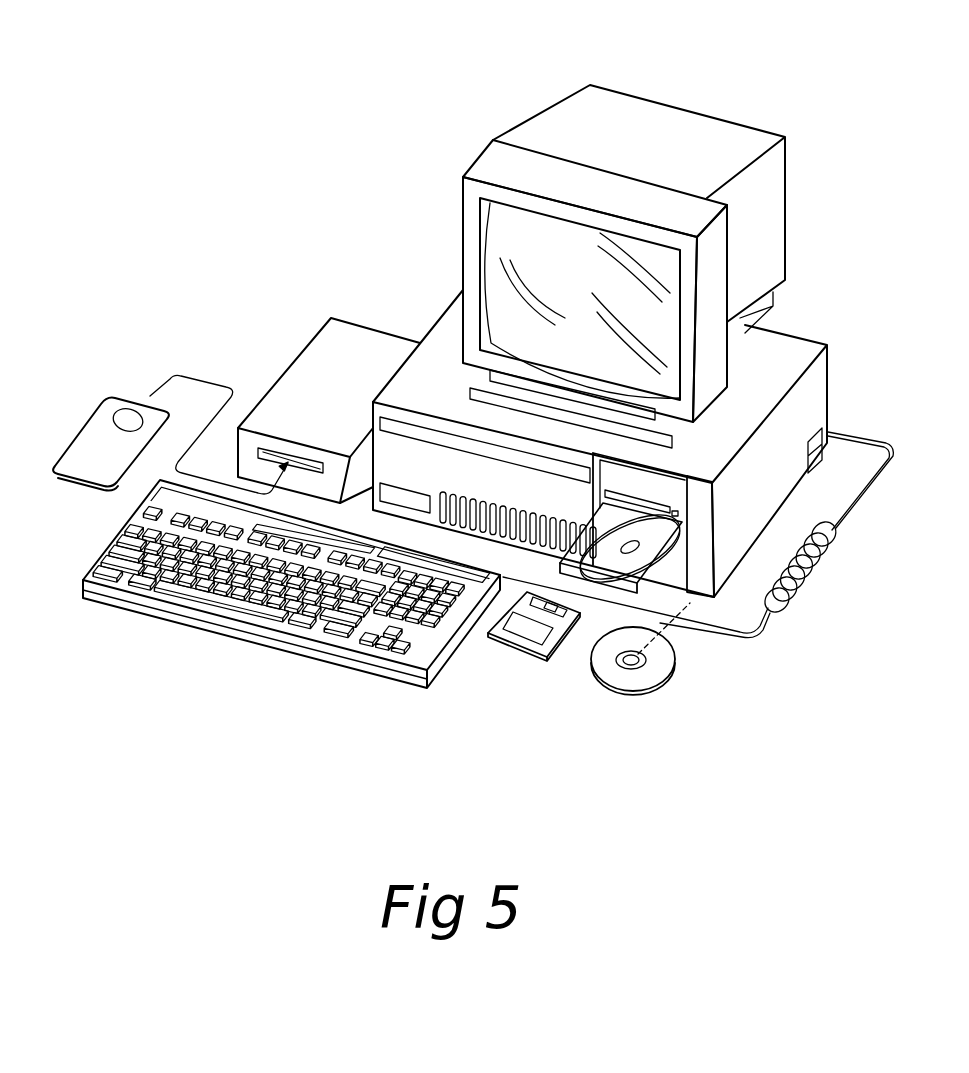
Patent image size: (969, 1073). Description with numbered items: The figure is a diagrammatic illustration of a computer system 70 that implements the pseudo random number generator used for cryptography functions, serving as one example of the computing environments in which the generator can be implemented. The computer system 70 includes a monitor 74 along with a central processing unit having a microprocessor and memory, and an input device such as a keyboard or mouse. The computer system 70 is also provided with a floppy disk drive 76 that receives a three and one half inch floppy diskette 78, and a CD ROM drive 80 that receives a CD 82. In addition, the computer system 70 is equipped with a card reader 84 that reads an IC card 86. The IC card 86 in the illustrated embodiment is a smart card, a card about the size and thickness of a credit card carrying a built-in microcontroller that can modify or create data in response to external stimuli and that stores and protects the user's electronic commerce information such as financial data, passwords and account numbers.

The computer system 70 is at (425, 80).
The monitor 74 is at (710, 260).
The floppy disk drive 76 is at (593, 512).
The floppy diskette 78 is at (522, 637).
The CD ROM drive 80 is at (662, 487).
The CD 82 is at (652, 675).
The card reader 84 is at (313, 365).
The IC card 86 is at (95, 437).